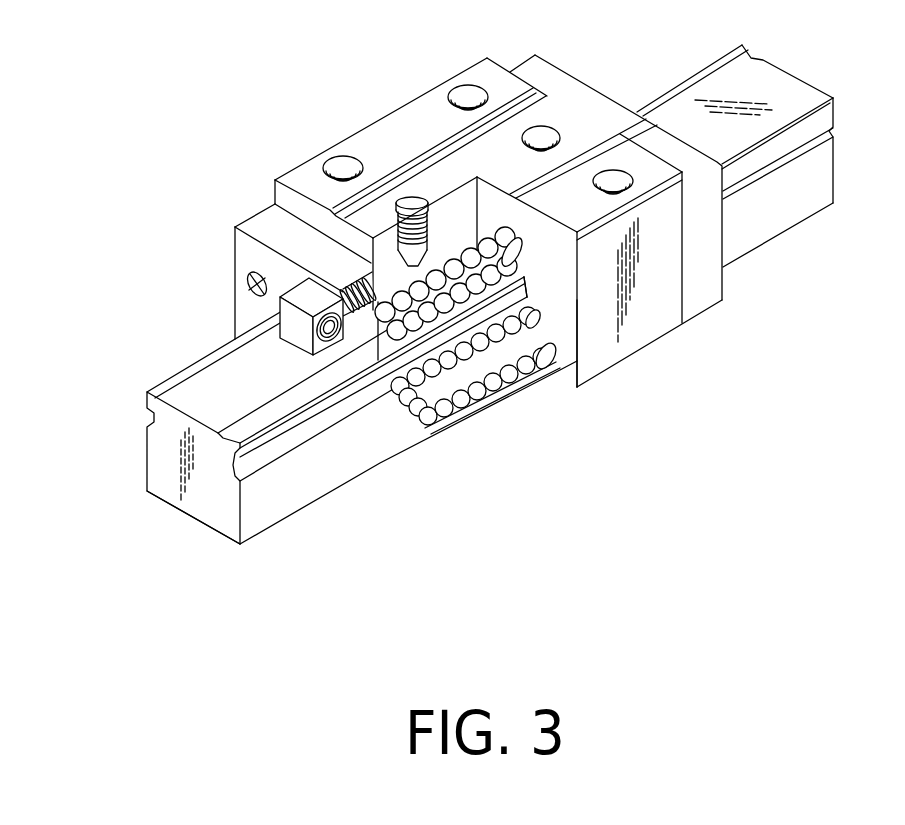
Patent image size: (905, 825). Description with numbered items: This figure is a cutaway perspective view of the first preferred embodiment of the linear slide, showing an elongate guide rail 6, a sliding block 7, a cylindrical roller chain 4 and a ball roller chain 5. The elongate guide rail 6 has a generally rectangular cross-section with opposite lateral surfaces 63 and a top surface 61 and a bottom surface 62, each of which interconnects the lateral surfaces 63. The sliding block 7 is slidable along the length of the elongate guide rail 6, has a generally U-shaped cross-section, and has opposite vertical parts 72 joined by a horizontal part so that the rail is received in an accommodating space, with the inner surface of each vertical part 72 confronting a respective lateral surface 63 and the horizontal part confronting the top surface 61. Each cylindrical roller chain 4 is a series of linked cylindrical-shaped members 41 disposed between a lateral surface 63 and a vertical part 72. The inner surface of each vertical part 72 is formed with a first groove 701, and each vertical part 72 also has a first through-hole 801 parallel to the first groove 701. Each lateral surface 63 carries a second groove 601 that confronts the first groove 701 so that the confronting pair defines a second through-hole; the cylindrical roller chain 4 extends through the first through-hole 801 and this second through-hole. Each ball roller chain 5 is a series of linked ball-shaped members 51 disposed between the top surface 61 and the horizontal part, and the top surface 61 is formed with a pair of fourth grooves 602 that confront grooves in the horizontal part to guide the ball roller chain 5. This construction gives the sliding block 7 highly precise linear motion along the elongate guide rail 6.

The cylindrical roller chain 4 is at (475, 450).
The cylindrical-shaped member 41 is at (484, 384).
The ball roller chain 5 is at (548, 386).
The ball-shaped member 51 is at (517, 257).
The elongate guide rail 6 is at (431, 364).
The top surface 61 is at (219, 391).
The second groove 601 is at (240, 455).
The fourth groove 602 is at (150, 403).
The bottom surface 62 is at (157, 500).
The lateral surface 63 is at (144, 467).
The sliding block 7 is at (484, 235).
The first groove 701 is at (533, 315).
The vertical part 72 is at (570, 332).
The first through-hole 801 is at (560, 380).